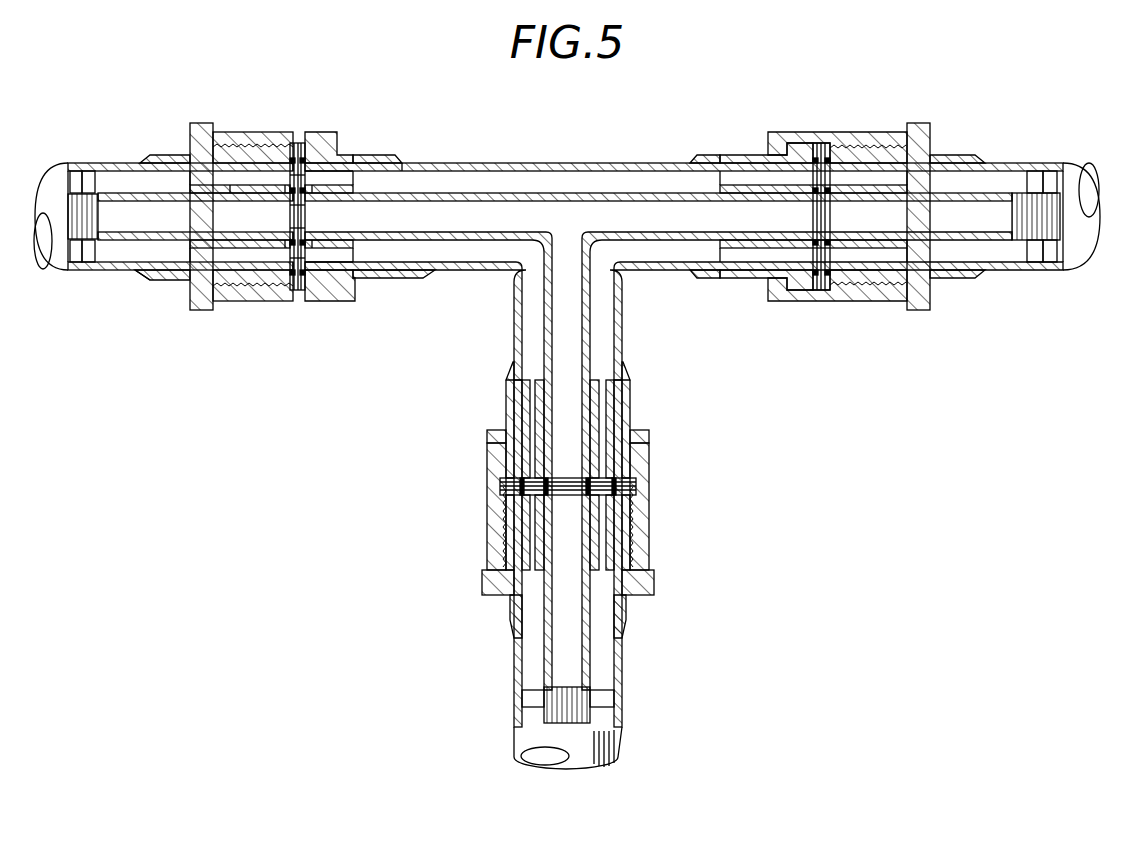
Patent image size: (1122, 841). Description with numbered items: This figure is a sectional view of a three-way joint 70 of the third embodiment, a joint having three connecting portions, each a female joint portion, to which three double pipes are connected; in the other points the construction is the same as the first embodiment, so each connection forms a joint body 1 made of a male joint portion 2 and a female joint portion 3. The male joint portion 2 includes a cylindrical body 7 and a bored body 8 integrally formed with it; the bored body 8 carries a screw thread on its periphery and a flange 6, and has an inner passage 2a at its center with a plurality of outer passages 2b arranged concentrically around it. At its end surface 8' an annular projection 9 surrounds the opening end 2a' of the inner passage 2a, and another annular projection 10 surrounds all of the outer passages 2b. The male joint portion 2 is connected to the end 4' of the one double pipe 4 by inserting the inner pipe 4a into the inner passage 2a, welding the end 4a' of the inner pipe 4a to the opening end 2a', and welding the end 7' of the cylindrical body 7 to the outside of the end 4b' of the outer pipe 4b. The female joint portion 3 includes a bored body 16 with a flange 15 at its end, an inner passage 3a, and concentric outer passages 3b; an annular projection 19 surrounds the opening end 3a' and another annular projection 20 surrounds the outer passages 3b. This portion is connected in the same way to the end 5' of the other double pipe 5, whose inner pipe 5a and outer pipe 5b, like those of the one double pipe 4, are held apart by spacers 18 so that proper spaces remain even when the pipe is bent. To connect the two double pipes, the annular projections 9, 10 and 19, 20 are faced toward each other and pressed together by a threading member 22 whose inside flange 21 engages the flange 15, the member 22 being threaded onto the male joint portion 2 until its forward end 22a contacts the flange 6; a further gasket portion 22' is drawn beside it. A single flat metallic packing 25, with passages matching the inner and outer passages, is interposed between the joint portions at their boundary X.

The joint body 1 is at (292, 143).
The male joint portion 2 is at (187, 160).
The inner passage 2a is at (218, 206).
The opening end of inner passage 2a' is at (269, 216).
The outer passages 2b is at (238, 178).
The female joint portion 3 is at (372, 178).
The inner passage 3a is at (358, 216).
The opening end of inner passage 3a' is at (329, 216).
The outer passages 3b is at (390, 160).
The double pipe 4 is at (83, 193).
The end of double pipe 4' is at (160, 143).
The inner pipe 4a is at (180, 207).
The end of inner pipe 4a' is at (273, 164).
The outer pipe 4b is at (163, 197).
The end of outer pipe 4b' is at (222, 216).
The double pipe 5 is at (761, 410).
The end of double pipe 5' is at (417, 142).
The inner pipe 5a is at (443, 197).
The outer pipe 5b is at (445, 163).
The flange 6 is at (205, 292).
The cylindrical body 7 is at (162, 290).
The end of cylindrical body 7' is at (138, 290).
The bored body 8 is at (275, 239).
The end surface of bored body 8' is at (302, 246).
The annular projection 9 is at (282, 302).
The annular projection 10 is at (303, 300).
The flange 15 is at (347, 301).
The bored body 16 is at (403, 288).
The spacers 18 is at (82, 180).
The annular projection 19 is at (383, 290).
The annular projection 20 is at (330, 302).
The inside flange 21 is at (357, 301).
The threading member 22 is at (285, 268).
The gasket 22' is at (266, 314).
The forward end of threading member 22a is at (220, 302).
The flat packing 25 is at (307, 143).
The joint 70 is at (597, 162).
The boundary X is at (298, 147).